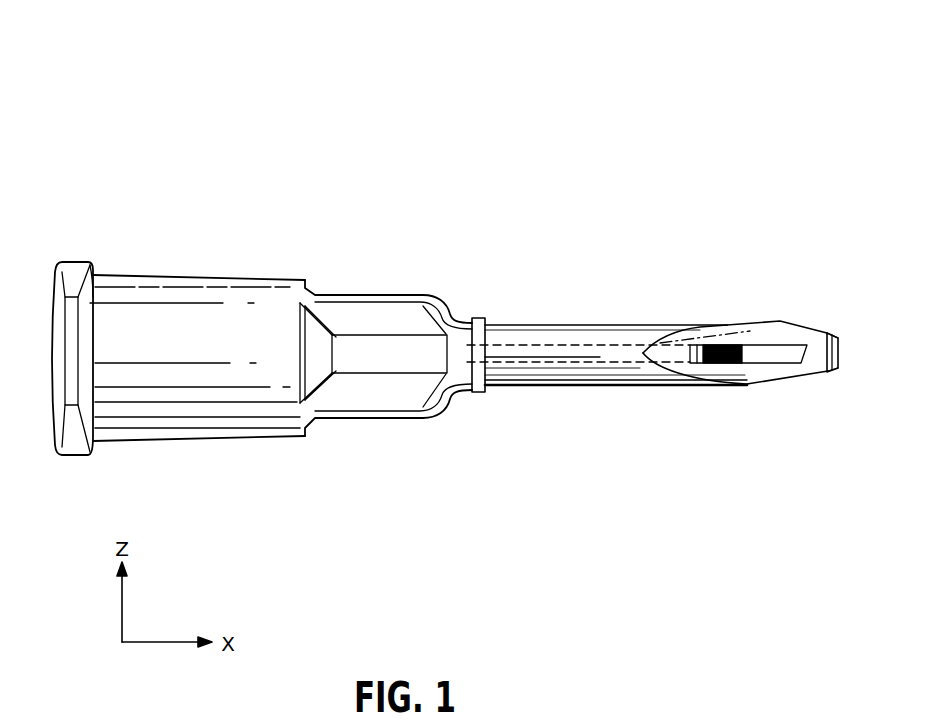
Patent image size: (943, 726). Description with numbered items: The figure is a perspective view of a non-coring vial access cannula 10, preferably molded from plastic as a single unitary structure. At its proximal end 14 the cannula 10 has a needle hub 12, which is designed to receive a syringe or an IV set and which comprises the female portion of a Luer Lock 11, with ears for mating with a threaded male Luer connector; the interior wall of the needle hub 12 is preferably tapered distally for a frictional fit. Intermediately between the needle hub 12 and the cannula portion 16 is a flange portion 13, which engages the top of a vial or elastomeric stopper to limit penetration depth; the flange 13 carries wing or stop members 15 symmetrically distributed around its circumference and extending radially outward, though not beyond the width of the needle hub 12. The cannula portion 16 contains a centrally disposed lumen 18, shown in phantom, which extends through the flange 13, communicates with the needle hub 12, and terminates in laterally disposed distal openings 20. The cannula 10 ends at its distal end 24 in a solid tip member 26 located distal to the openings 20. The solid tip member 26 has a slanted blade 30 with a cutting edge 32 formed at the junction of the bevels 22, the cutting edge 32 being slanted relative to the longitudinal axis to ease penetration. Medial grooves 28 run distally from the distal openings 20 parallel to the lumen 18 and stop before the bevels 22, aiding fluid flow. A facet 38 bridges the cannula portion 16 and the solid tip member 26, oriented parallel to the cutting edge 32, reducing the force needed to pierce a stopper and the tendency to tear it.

The non-coring vial access cannula 10 is at (497, 120).
The Luer Lock 11 is at (77, 447).
The needle hub 12 is at (147, 322).
The flange portion 13 is at (355, 357).
The proximal end 14 is at (57, 293).
The wing or stop members 15 is at (390, 393).
The cannula portion 16 is at (564, 337).
The centrally disposed lumen 18 is at (522, 352).
The distal openings 20 is at (713, 363).
The bevels 22 is at (838, 366).
The distal end 24 is at (840, 342).
The solid tip member 26 is at (752, 325).
The medial grooves 28 is at (770, 355).
The slanted blade 30 is at (822, 338).
The cutting edge 32 is at (843, 372).
The facet 38 is at (753, 367).